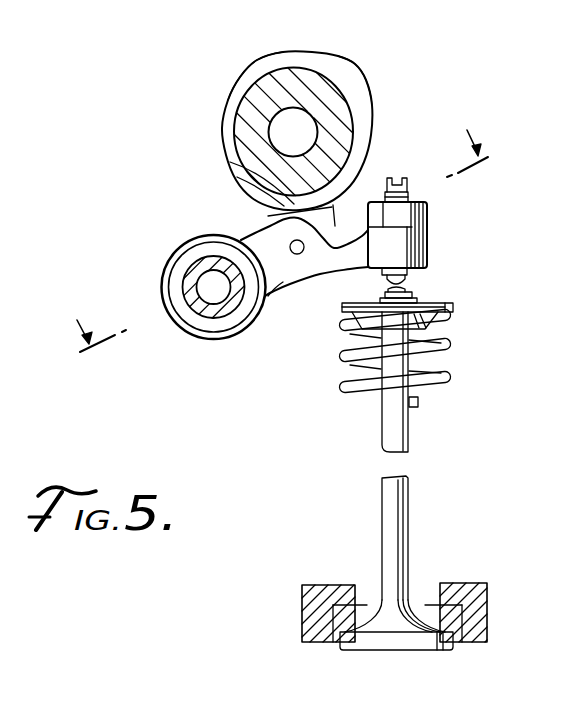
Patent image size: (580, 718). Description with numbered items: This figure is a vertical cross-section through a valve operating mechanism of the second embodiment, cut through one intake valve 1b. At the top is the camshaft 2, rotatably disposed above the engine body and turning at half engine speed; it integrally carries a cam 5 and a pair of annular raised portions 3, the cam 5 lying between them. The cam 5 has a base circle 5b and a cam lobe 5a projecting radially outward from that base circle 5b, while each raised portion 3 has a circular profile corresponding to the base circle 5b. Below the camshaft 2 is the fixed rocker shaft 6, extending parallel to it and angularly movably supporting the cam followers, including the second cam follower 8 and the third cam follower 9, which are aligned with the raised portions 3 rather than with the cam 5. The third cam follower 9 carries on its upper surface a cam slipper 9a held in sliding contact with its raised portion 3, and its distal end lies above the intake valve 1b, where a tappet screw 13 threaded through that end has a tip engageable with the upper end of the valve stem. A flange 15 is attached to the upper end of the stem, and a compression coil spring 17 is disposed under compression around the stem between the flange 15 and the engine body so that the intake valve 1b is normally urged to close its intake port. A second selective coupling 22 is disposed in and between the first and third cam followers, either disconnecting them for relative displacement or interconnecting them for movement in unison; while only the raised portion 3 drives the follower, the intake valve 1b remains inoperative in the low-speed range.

The cam 5 is at (312, 52).
The cam lobe 5a is at (354, 68).
The base circle 5b is at (239, 77).
The camshaft 2 is at (234, 117).
The cam slipper 9a is at (245, 166).
The annular raised portion 3 is at (233, 183).
The second selective coupling 22 is at (270, 227).
The rocker shaft 6 is at (185, 302).
The third cam follower 9 is at (285, 286).
The tappet screw 13 is at (400, 177).
The second cam follower 8 is at (286, 255).
The flange 15 is at (454, 306).
The compression coil spring 17 is at (446, 379).
The intake valve 1b is at (417, 479).